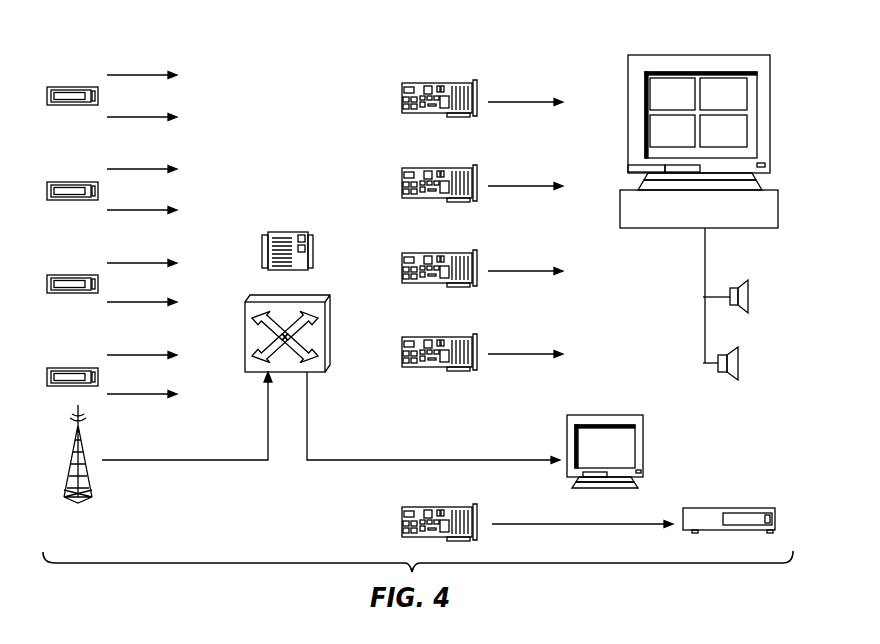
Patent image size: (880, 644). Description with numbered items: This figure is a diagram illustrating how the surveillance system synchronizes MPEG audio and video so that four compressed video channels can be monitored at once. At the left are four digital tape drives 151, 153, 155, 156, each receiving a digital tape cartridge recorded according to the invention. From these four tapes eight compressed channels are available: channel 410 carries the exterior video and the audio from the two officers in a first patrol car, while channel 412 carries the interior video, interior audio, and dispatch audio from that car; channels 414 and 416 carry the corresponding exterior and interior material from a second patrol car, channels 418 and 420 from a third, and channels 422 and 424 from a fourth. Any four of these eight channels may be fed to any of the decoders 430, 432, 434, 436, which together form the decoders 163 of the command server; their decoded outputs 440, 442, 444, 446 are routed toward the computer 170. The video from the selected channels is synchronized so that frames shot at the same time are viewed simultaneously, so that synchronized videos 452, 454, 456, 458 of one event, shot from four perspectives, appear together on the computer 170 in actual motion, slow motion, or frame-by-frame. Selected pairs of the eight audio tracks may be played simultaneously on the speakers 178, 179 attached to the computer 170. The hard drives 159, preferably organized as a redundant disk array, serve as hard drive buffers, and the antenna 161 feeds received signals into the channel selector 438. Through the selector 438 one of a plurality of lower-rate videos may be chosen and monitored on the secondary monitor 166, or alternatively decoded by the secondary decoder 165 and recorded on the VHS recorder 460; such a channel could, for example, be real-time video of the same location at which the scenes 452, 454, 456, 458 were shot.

The digital tape drive 151 is at (63, 366).
The digital tape drive 153 is at (63, 273).
The digital tape drive 155 is at (63, 180).
The digital tape drive 156 is at (63, 85).
The hard drives 159 is at (293, 232).
The antenna 161 is at (92, 490).
The MPEG-2 decoders 163 is at (421, 202).
The MPEG-1 decoder 165 is at (448, 507).
The MPEG-1 monitor 166 is at (643, 435).
The computer 170 is at (705, 123).
The speaker 178 is at (750, 292).
The speaker 179 is at (738, 365).
The channel 410 is at (133, 75).
The channel 412 is at (143, 117).
The channel 414 is at (133, 169).
The channel 416 is at (143, 210).
The channel 418 is at (133, 263).
The channel 420 is at (143, 302).
The channel 422 is at (133, 355).
The channel 424 is at (143, 394).
The MPEG-2 decoder 430 is at (458, 83).
The MPEG-2 decoder 432 is at (458, 168).
The MPEG-2 decoder 434 is at (458, 253).
The MPEG-2 decoder 436 is at (458, 337).
The selector 438 is at (327, 328).
The decoder output 440 is at (528, 102).
The decoder output 442 is at (532, 186).
The decoder output 444 is at (532, 271).
The decoder output 446 is at (532, 354).
The synchronized video 452 is at (688, 103).
The synchronized video 454 is at (739, 103).
The synchronized video 456 is at (688, 140).
The synchronized video 458 is at (739, 140).
The VHS recorder 460 is at (753, 508).